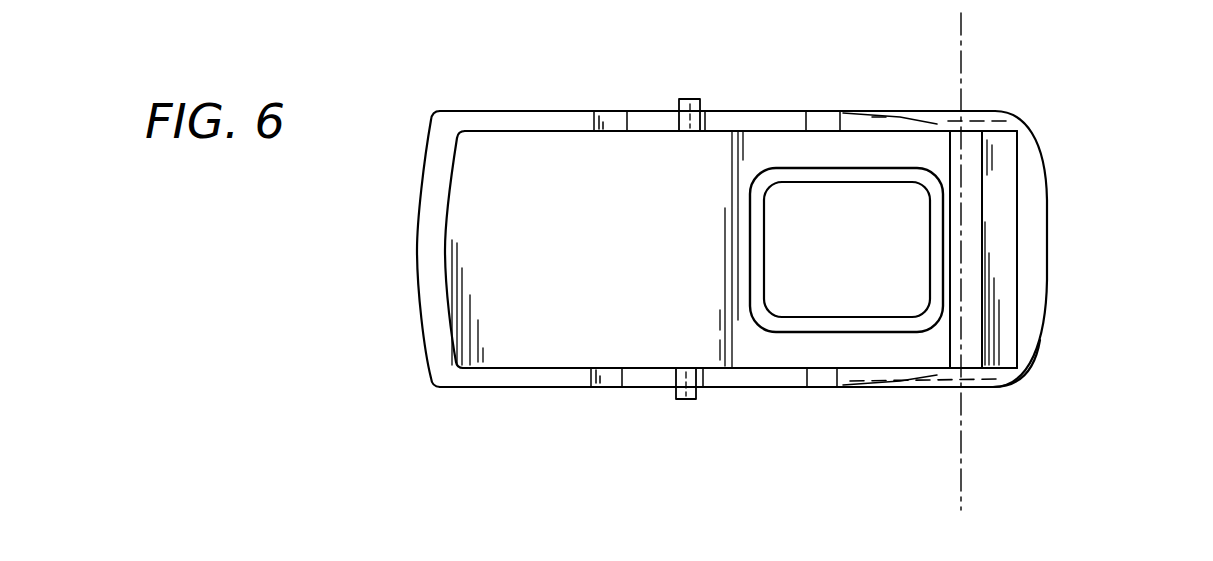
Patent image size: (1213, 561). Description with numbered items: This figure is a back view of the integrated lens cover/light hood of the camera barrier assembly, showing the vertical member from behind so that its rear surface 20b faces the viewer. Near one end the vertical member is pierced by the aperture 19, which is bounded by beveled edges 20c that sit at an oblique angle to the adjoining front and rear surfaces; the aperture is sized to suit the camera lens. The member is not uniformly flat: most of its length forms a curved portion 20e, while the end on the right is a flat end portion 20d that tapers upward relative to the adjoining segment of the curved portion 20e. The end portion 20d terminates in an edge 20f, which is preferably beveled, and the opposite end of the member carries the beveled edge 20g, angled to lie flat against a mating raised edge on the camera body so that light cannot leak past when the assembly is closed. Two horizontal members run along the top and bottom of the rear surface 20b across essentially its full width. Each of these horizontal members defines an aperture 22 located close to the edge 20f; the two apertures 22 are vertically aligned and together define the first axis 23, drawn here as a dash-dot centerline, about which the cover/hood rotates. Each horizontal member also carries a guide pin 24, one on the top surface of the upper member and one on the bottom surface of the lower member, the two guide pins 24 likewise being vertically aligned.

The aperture 19 is at (845, 286).
The rear surface 20b is at (582, 236).
The edges 20c is at (808, 183).
The end portion 20d is at (985, 389).
The curved portion 20e is at (565, 390).
The edge 20f is at (1048, 214).
The edge 20g is at (425, 313).
The aperture 22 is at (963, 111).
The first axis 23 is at (961, 68).
The guide pin 24 is at (688, 100).